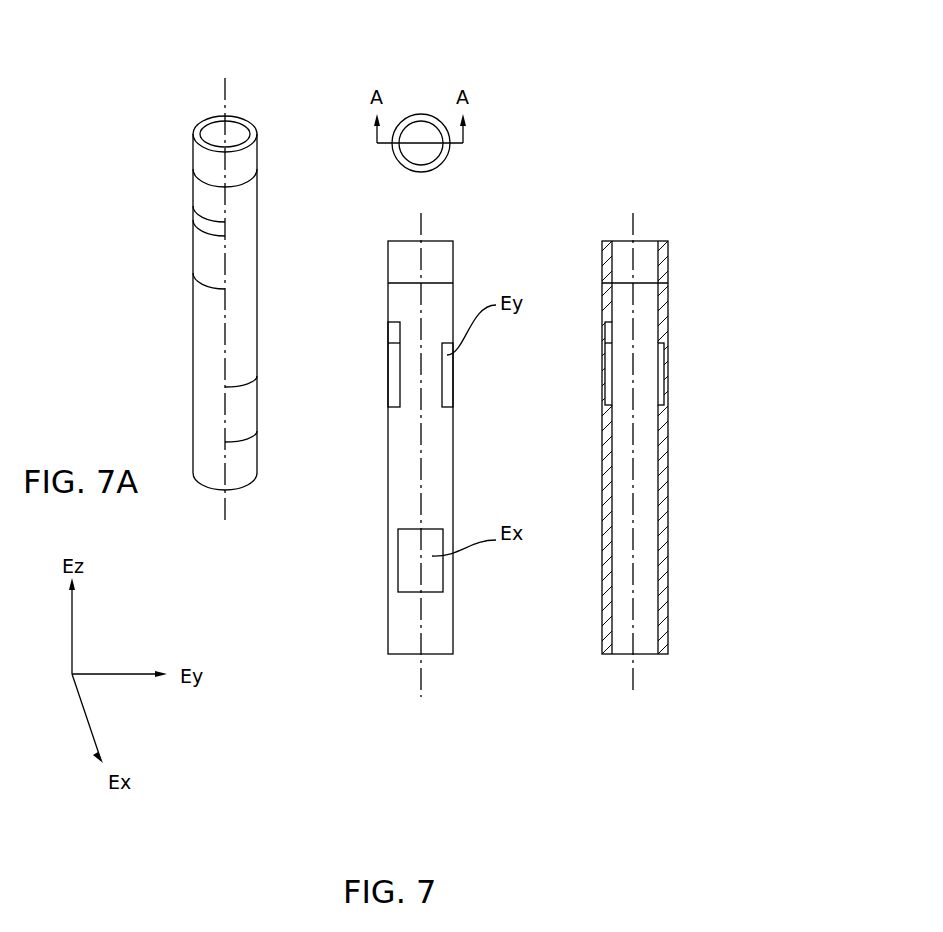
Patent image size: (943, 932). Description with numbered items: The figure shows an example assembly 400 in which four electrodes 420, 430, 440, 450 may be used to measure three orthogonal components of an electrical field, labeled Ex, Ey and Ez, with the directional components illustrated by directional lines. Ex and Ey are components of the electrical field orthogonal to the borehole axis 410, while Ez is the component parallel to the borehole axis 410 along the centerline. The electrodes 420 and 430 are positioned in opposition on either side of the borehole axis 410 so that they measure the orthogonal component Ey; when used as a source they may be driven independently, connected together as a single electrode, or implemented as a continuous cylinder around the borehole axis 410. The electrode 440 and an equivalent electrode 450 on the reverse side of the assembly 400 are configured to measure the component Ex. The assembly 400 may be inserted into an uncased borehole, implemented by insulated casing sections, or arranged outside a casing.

In FIG. 7A, the assembly 400 is at (225, 303).
In FIG. 7, the assembly 400 is at (125, 47).
In FIG. 7A, the borehole axis 410 is at (225, 92).
In FIG. 7, the borehole axis 410 is at (421, 230).
In FIG. 7A, the electrode 420 is at (200, 245).
In FIG. 7, the electrode 420 is at (395, 362).
In FIG. 7, the electrode 430 is at (447, 385).
In FIG. 7A, the electrode 440 is at (242, 398).
In FIG. 7, the electrode 440 is at (433, 577).
In FIG. 7, the electrode 450 is at (397, 560).